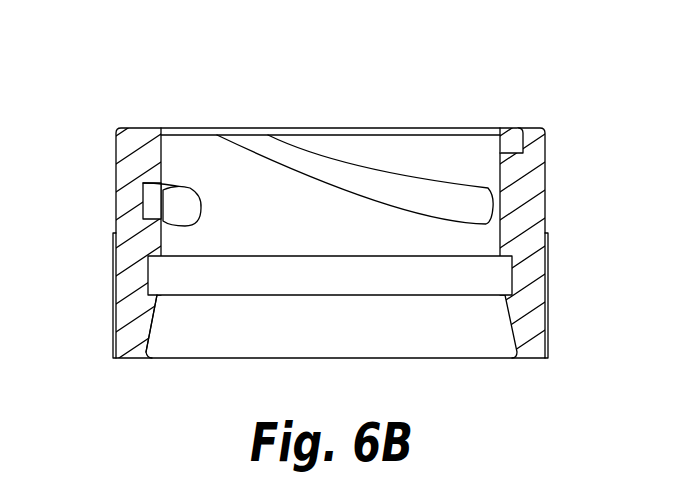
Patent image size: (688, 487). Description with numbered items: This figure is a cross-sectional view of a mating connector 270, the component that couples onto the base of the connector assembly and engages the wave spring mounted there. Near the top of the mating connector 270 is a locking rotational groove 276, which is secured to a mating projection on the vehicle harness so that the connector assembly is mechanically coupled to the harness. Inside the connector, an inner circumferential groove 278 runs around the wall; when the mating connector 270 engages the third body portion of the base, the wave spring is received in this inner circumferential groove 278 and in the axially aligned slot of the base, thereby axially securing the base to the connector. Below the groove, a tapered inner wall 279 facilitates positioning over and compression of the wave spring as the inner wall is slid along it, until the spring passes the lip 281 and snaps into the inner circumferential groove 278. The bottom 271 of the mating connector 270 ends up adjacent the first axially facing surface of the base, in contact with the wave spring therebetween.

The mating connector 270 is at (518, 90).
The bottom 271 is at (482, 360).
The locking rotational groove 276 is at (278, 150).
The inner circumferential groove 278 is at (512, 278).
The tapered inner wall 279 is at (156, 325).
The lip 281 is at (157, 298).